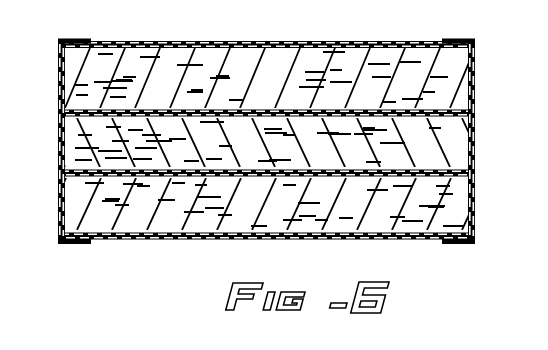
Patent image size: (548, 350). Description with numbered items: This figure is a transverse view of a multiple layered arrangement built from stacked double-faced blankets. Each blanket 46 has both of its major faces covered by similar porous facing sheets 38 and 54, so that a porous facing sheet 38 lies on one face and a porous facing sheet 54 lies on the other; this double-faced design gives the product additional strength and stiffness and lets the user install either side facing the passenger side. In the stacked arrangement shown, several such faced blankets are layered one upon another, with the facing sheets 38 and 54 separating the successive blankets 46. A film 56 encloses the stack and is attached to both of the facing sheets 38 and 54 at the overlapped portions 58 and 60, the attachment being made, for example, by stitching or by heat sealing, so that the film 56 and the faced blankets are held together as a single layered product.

The porous facing sheet 38 is at (374, 107).
The blanket 46 is at (228, 68).
The porous facing sheet 54 is at (292, 44).
The film 56 is at (58, 115).
The overlapped portion 58 is at (81, 40).
The overlapped portion 60 is at (78, 243).